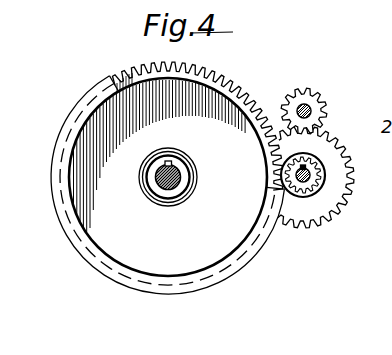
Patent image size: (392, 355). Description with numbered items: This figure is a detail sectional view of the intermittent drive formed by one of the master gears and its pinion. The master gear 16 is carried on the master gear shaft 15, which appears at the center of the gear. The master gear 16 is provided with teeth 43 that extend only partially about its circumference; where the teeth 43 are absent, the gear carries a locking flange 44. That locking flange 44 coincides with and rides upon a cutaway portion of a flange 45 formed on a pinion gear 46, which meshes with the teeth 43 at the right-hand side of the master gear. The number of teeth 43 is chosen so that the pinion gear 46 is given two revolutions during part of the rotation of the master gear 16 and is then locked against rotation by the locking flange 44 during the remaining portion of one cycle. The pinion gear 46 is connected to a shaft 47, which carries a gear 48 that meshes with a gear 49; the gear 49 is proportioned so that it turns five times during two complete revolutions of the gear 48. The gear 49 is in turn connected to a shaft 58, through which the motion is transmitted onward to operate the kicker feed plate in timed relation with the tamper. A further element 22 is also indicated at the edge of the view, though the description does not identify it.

The master gear shaft 15 is at (179, 187).
The master gear 16 is at (108, 227).
The frame 22 is at (381, 218).
The teeth 43 is at (229, 76).
The locking flange 44 is at (77, 105).
The flange 45 is at (320, 157).
The pinion gear 46 is at (318, 200).
The shaft 47 is at (295, 173).
The gear 48 is at (325, 132).
The gear 49 is at (313, 93).
The shaft 58 is at (290, 101).